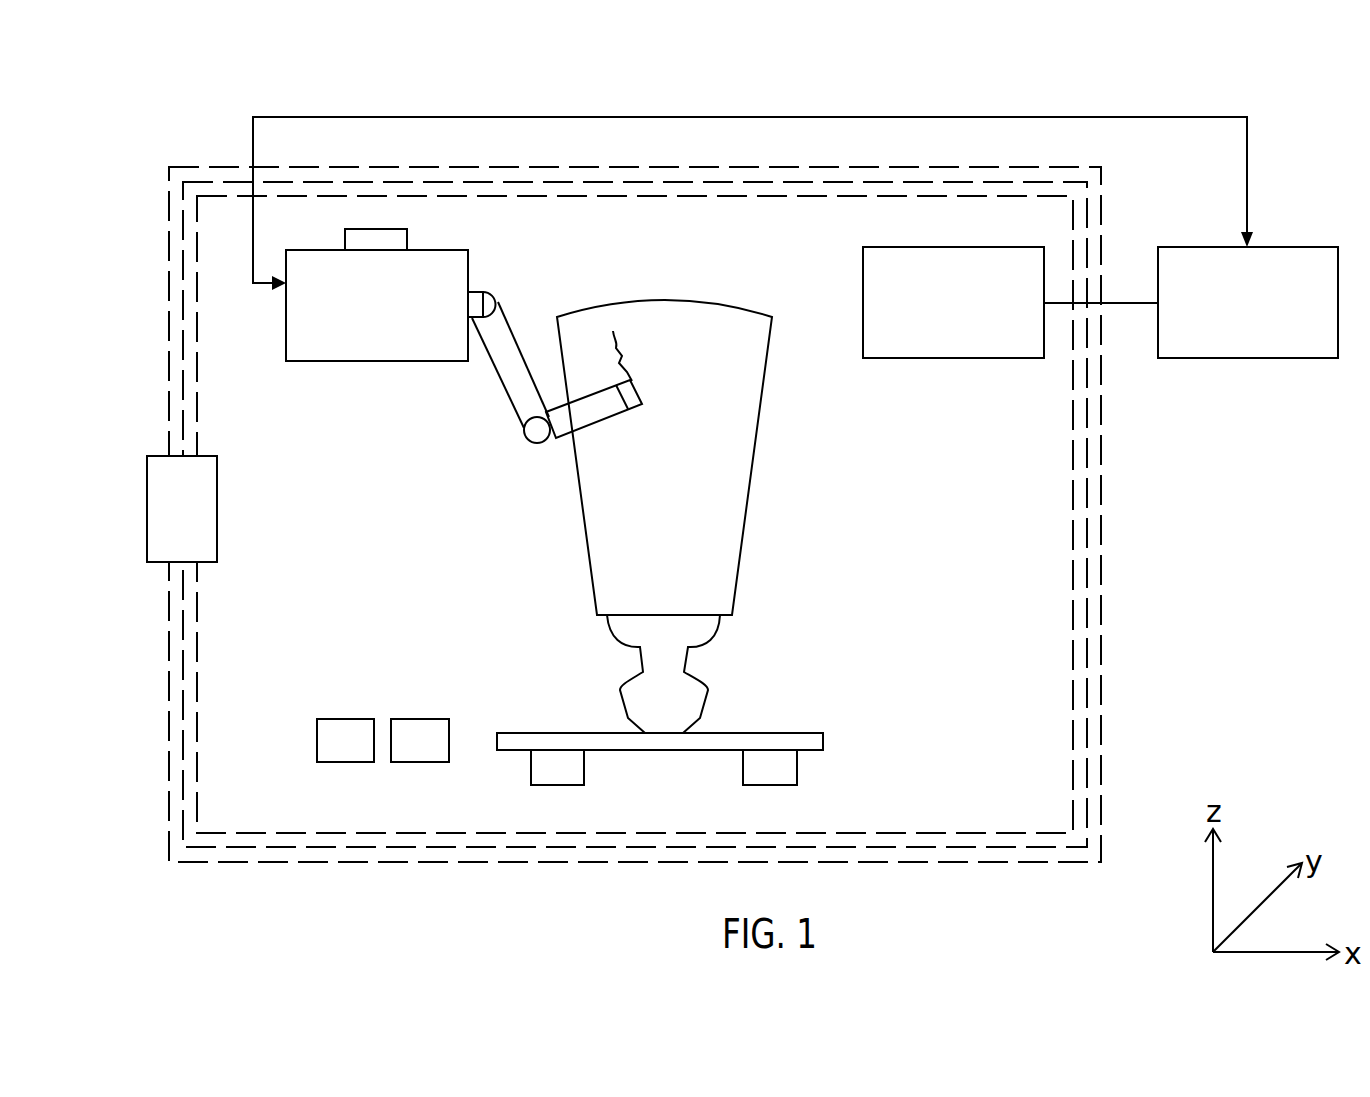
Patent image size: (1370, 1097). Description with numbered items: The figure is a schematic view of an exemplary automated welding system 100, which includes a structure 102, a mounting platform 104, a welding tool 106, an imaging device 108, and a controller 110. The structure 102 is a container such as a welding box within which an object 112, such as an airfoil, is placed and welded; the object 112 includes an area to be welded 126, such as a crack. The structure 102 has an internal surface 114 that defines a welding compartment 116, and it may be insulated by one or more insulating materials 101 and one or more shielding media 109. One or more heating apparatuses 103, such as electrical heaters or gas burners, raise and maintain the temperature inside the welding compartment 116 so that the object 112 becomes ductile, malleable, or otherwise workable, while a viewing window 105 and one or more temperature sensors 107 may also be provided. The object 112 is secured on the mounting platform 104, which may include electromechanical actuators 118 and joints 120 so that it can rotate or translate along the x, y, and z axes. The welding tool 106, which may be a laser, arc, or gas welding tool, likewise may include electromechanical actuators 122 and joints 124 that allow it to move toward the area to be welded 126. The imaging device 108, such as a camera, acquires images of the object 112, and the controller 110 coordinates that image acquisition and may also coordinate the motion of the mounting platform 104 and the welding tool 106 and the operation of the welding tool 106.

The automated welding system 100 is at (1176, 88).
The insulating material 101 is at (226, 179).
The structure 102 is at (169, 283).
The heating apparatus 103 is at (345, 740).
The mounting platform 104 is at (823, 745).
The viewing window 105 is at (217, 508).
The welding tool 106 is at (377, 361).
The temperature sensor 107 is at (420, 740).
The imaging device 108 is at (953, 358).
The shielding medium 109 is at (183, 738).
The controller 110 is at (1247, 358).
The object 112 is at (753, 457).
The internal surface 114 is at (197, 675).
The welding compartment 116 is at (399, 594).
The electromechanical actuator 118 is at (540, 770).
The joint 120 is at (785, 772).
The electromechanical actuator 122 is at (393, 229).
The joint 124 is at (533, 445).
The area to be welded 126 is at (630, 340).